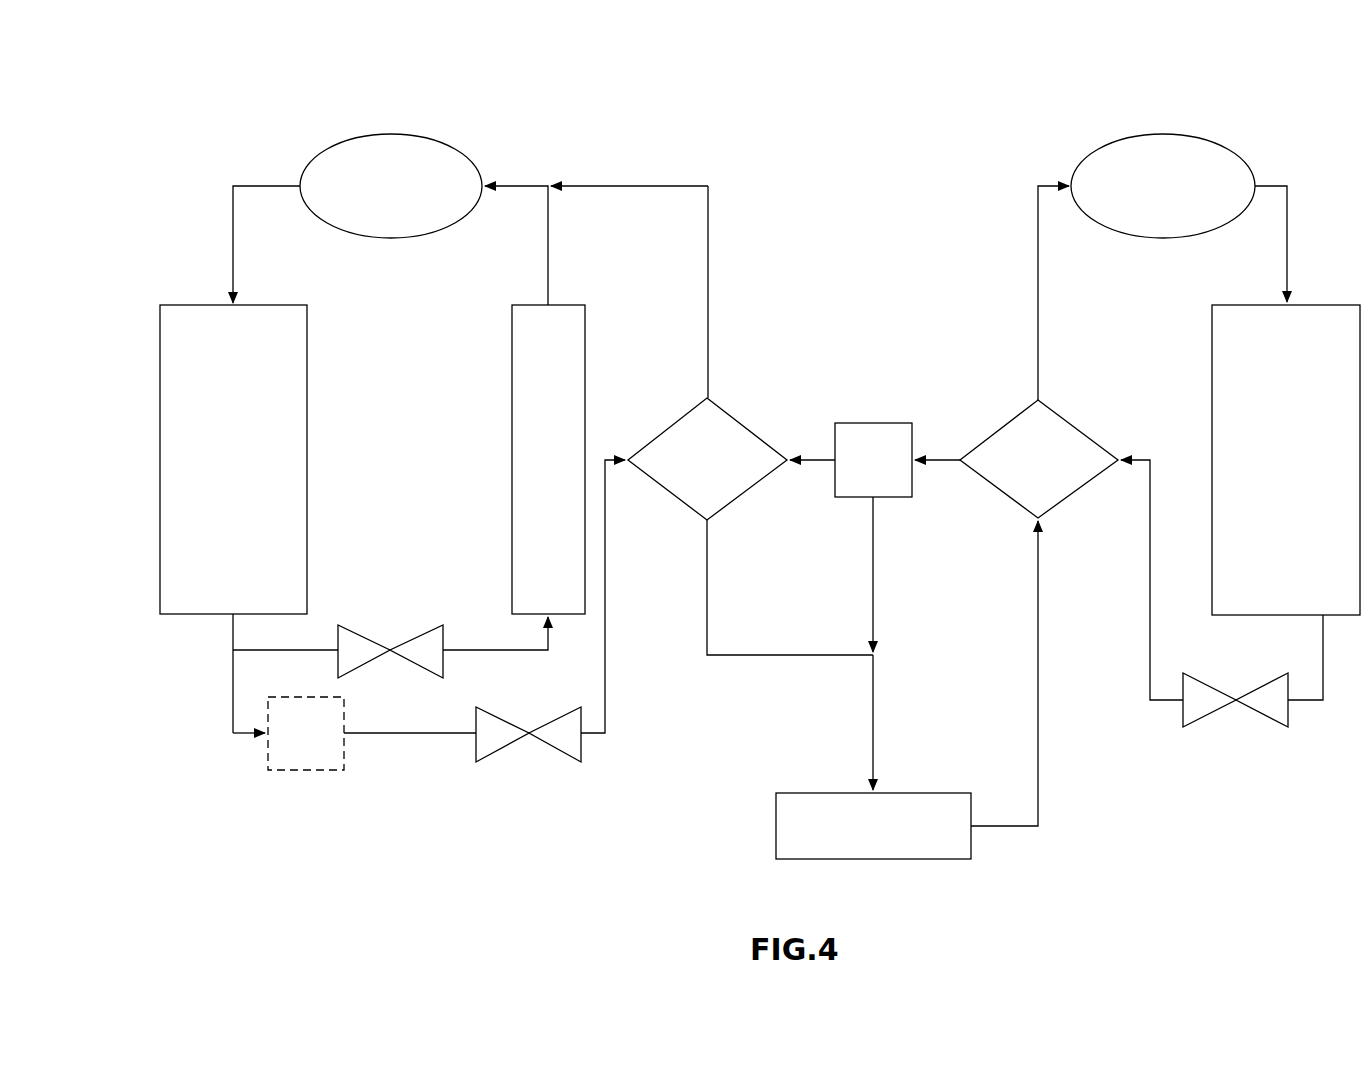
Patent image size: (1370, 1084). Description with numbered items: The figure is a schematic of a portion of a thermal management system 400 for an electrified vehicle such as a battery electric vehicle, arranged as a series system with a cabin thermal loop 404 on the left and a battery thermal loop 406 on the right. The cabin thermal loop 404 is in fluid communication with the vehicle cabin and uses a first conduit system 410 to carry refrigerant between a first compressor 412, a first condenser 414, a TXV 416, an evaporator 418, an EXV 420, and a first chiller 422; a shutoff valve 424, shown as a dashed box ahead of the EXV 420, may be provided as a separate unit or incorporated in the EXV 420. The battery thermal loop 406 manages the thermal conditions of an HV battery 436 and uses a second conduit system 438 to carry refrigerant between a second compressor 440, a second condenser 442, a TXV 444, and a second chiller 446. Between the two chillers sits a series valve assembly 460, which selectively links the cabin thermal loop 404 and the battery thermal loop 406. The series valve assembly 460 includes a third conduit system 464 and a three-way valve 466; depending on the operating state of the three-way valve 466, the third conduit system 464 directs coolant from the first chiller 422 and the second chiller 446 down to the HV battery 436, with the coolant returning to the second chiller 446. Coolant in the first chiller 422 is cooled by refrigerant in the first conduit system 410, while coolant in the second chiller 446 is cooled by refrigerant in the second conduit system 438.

The thermal management system 400 is at (899, 76).
The cabin thermal loop 404 is at (556, 110).
The battery thermal loop 406 is at (1060, 140).
The first conduit system 410 is at (522, 180).
The first compressor 412 is at (447, 140).
The first condenser 414 is at (201, 304).
The TXV 416 is at (443, 640).
The evaporator 418 is at (566, 304).
The EXV 420 is at (583, 745).
The first chiller 422 is at (749, 427).
The shutoff valve 424 is at (306, 774).
The HV battery 436 is at (776, 828).
The second conduit system 438 is at (1275, 178).
The second compressor 440 is at (1218, 141).
The second condenser 442 is at (1255, 304).
The TXV 444 is at (1290, 713).
The second chiller 446 is at (1078, 428).
The series valve assembly 460 is at (868, 326).
The third conduit system 464 is at (810, 452).
The three-way valve 466 is at (873, 422).